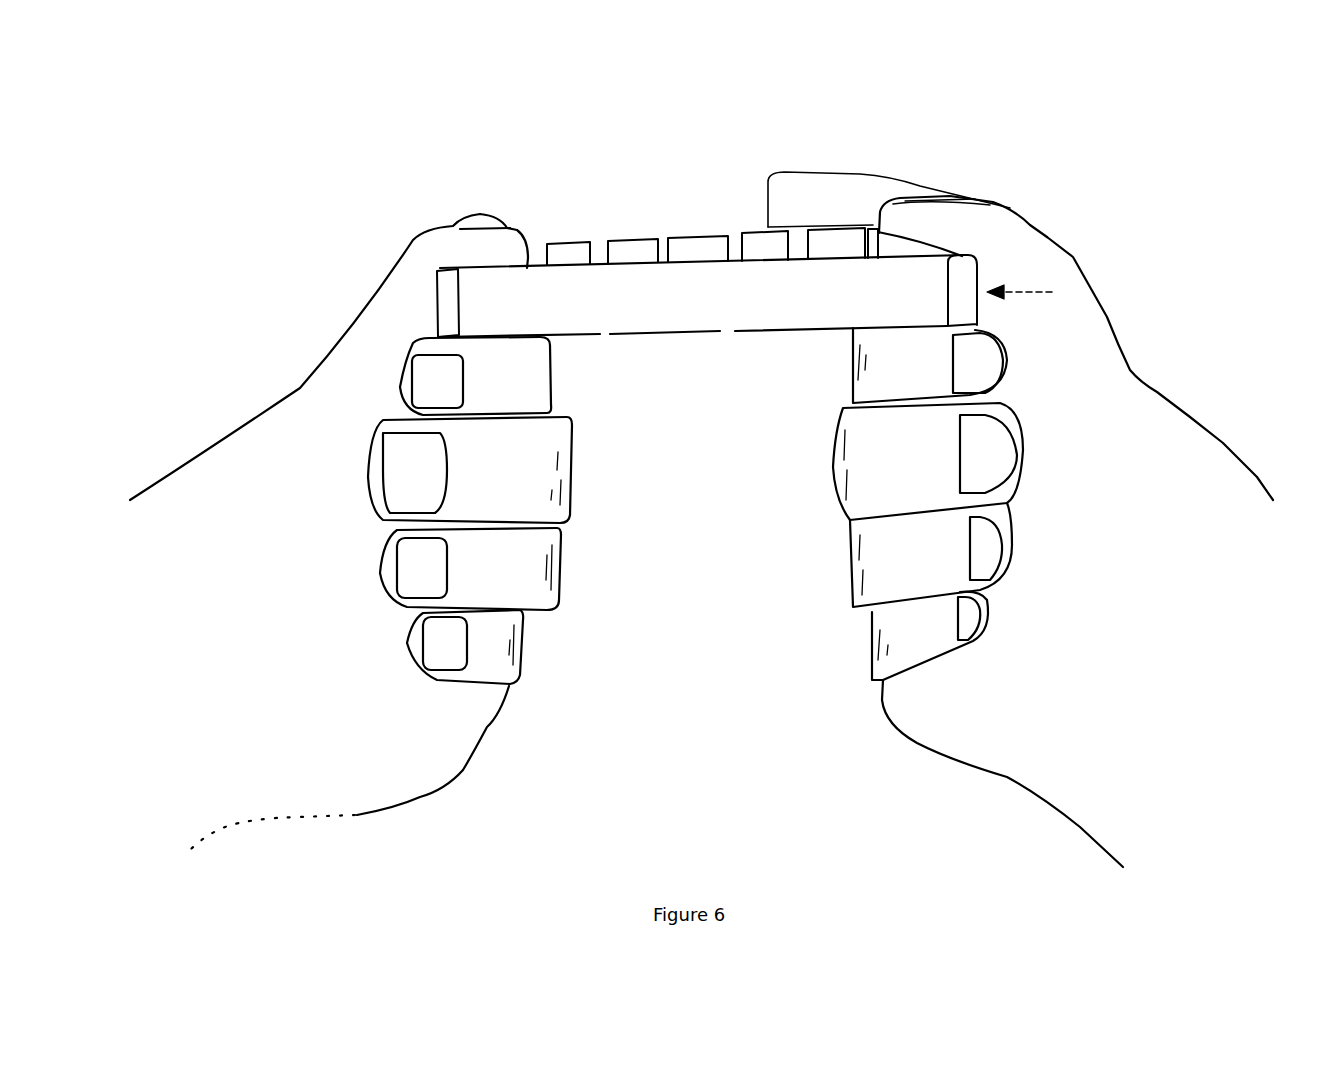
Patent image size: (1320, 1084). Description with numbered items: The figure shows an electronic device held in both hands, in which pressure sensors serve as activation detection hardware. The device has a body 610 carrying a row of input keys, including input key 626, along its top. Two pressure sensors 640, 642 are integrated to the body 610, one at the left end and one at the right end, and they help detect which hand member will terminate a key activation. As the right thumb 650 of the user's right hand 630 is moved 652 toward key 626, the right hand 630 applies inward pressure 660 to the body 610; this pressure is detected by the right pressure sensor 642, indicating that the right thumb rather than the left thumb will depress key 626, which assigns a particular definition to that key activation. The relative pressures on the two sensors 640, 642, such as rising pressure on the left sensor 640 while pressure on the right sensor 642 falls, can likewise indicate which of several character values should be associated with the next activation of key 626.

The body 610 is at (723, 317).
The input key 626 is at (742, 237).
The right hand 630 is at (1263, 497).
The pressure sensor 640 is at (440, 290).
The pressure sensor 642 is at (967, 287).
The right thumb 650 is at (1003, 227).
The movement of the thumb 652 is at (823, 190).
The inward pressure 660 is at (1037, 283).